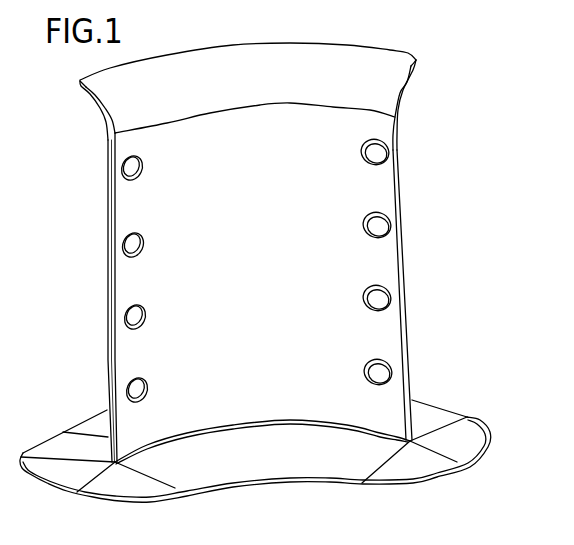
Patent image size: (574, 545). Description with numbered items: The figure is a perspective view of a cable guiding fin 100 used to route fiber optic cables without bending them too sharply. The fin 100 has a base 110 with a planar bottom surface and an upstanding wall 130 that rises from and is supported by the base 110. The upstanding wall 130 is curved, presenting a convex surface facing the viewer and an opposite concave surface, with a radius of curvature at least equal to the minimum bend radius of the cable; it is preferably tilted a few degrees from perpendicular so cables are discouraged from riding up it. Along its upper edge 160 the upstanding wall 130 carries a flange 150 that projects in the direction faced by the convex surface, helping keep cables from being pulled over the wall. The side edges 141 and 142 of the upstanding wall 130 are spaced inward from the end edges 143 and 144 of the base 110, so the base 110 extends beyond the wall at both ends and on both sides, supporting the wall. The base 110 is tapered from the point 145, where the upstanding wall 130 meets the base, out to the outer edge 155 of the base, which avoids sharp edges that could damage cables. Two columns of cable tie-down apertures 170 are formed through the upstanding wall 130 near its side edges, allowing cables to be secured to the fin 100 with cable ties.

The cable guiding fin 100 is at (478, 65).
The base 110 is at (197, 470).
The upstanding wall 130 is at (265, 279).
The side edge 141 is at (107, 268).
The side edge 142 is at (408, 262).
The end edge 143 is at (77, 492).
The end edge 144 is at (457, 462).
The point 145 is at (315, 430).
The flange 150 is at (188, 67).
The outer edge 155 is at (283, 481).
The upper edge 160 is at (262, 105).
The cable tie-down apertures 170 is at (387, 157).